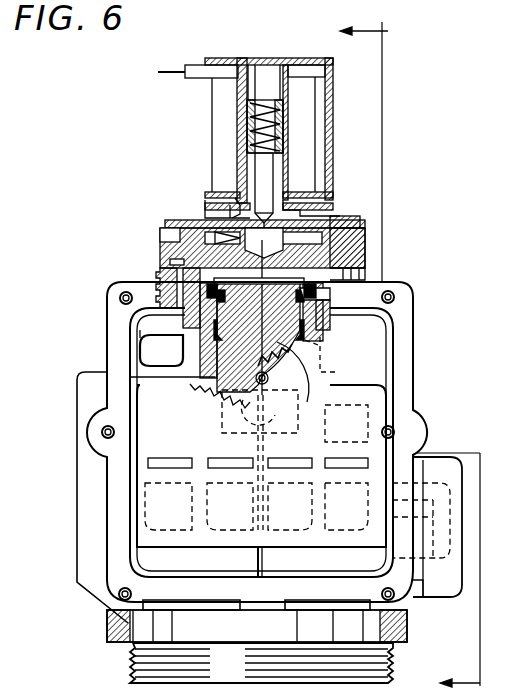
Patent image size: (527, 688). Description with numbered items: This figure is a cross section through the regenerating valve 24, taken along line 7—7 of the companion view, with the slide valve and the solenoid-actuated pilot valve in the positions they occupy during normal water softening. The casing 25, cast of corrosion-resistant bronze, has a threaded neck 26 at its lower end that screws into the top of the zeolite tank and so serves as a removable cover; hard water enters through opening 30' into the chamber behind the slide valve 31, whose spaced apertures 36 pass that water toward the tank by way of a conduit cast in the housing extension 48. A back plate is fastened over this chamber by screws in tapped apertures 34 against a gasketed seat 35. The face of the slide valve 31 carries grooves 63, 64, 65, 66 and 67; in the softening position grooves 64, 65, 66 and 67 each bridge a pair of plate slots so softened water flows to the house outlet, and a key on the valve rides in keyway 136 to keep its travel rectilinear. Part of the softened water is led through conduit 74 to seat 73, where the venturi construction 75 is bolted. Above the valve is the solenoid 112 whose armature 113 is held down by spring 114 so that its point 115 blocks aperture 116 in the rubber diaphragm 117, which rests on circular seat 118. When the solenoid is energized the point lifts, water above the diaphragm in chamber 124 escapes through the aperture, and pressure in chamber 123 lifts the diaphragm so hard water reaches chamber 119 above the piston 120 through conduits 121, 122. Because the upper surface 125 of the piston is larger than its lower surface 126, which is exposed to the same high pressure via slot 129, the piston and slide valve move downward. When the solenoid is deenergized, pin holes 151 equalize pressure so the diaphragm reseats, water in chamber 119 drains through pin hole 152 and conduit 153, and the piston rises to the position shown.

The line 7—7 section indication 7 is at (403, 355).
The regenerating valve 24 is at (248, 445).
The casing 25 is at (413, 357).
The threaded neck 26 is at (133, 656).
The opening 30' is at (104, 327).
The slide valve 31 is at (147, 402).
The tapped apertures 34 is at (120, 299).
The seat 35 is at (118, 348).
The spaced apertures 36 is at (226, 458).
The housing extension 48 is at (77, 476).
The groove 63 is at (365, 417).
The groove 64 is at (346, 522).
The groove 65 is at (296, 522).
The groove 66 is at (226, 522).
The groove 67 is at (172, 522).
The seat 73 is at (412, 584).
The conduit 74 is at (412, 460).
The venturi construction 75 is at (462, 498).
The solenoid 112 is at (222, 97).
The armature 113 is at (270, 178).
The spring 114 is at (283, 132).
The point 115 is at (300, 210).
The aperture 116 is at (367, 249).
The rubber diaphragm 117 is at (220, 212).
The seat 118 is at (362, 234).
The chamber 119 is at (183, 344).
The piston 120 is at (330, 332).
The conduit 121 is at (165, 272).
The conduit 122 is at (168, 262).
The chamber 123 is at (162, 237).
The chamber 124 is at (232, 215).
The upper surface 125 is at (330, 323).
The lower surface 126 is at (210, 396).
The slot 129 is at (287, 392).
The keyway 136 is at (263, 565).
The pin holes 151 is at (205, 218).
The pin hole 152 is at (330, 297).
The conduit 153 is at (332, 368).